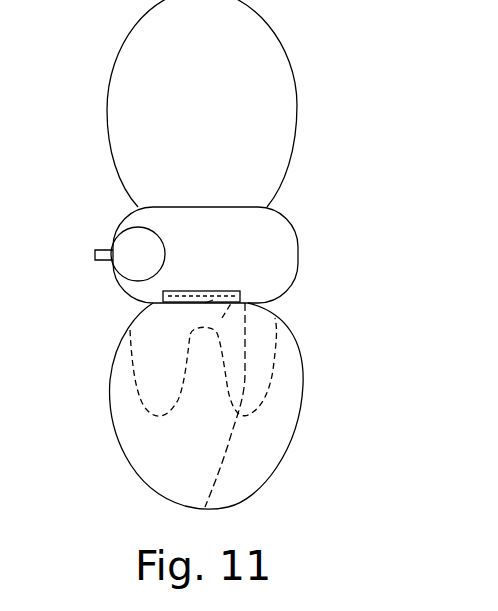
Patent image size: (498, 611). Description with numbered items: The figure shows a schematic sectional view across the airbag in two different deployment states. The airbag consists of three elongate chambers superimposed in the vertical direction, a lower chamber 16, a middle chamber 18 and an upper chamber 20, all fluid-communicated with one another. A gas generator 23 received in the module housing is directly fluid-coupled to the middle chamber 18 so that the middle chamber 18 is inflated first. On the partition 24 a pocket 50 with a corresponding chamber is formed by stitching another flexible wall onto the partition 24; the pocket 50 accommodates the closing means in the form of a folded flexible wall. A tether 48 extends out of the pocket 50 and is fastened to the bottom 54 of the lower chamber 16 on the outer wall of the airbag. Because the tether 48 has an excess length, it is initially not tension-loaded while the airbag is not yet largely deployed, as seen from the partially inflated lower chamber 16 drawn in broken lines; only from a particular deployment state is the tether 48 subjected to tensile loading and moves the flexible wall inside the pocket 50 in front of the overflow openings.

The upper chamber 20 is at (247, 127).
The middle chamber 18 is at (246, 253).
The lower chamber 16 is at (197, 472).
The gas generator 23 is at (126, 262).
The partition 24 is at (210, 298).
The pocket 50 is at (240, 292).
The tether 48 is at (222, 318).
The bottom 54 is at (222, 508).